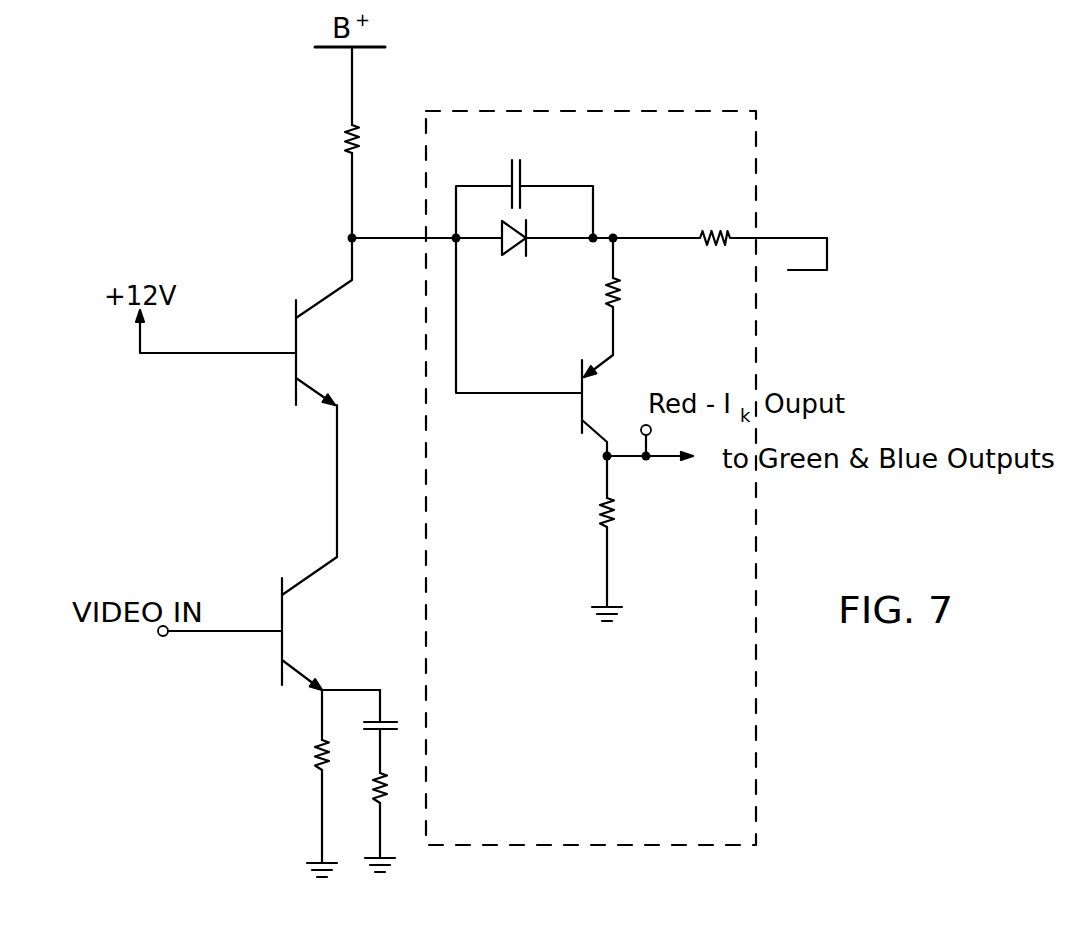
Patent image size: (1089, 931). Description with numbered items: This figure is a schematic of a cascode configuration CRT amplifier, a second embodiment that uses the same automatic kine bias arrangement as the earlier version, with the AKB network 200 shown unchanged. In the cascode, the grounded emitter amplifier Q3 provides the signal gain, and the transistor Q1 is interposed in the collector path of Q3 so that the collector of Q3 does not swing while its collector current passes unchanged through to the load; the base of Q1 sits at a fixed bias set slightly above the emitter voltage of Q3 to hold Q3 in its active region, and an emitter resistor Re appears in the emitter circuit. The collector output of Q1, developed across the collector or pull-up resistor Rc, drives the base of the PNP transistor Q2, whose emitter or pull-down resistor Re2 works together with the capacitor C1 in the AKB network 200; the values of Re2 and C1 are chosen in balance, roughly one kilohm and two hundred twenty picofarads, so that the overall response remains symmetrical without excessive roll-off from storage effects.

The AKB network 200 is at (733, 111).
The transistor Q1 is at (334, 364).
The PNP transistor Q2 is at (615, 337).
The grounded emitter amplifier Q3 is at (304, 674).
The collector resistor Rc is at (357, 135).
The emitter resistor Re is at (318, 742).
The emitter resistor Re2 is at (373, 794).
The capacitor C1 is at (523, 170).